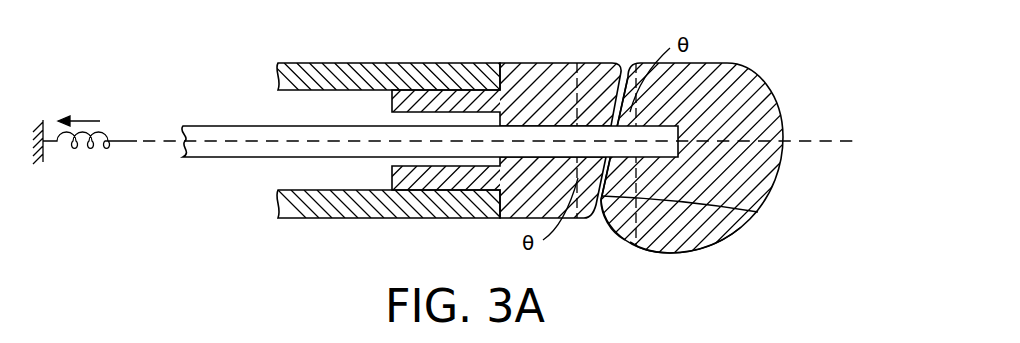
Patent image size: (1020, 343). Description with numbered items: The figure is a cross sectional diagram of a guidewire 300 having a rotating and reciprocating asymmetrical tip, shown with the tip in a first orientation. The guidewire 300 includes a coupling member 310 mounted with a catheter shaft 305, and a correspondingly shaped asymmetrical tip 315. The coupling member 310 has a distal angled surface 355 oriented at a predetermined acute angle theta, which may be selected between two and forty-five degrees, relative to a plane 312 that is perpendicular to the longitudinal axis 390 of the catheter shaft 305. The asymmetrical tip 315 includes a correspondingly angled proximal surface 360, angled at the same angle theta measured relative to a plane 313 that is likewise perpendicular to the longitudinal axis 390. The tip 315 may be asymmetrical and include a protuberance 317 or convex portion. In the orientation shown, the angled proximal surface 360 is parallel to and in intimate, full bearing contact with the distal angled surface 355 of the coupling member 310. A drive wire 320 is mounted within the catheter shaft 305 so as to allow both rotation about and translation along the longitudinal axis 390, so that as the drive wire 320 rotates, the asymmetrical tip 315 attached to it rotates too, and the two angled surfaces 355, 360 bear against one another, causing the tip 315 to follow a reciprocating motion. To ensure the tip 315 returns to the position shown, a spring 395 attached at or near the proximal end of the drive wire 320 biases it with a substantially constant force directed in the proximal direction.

The guidewire 300 is at (258, 26).
The catheter shaft 305 is at (350, 62).
The coupling member 310 is at (512, 70).
The plane 312 is at (571, 73).
The plane 313 is at (758, 212).
The asymmetrical tip 315 is at (748, 83).
The protuberance 317 is at (683, 240).
The drive wire 320 is at (207, 135).
The distal angled surface 355 is at (616, 98).
The proximal angled surface 360 is at (599, 215).
The longitudinal axis 390 is at (827, 136).
The spring 395 is at (82, 150).